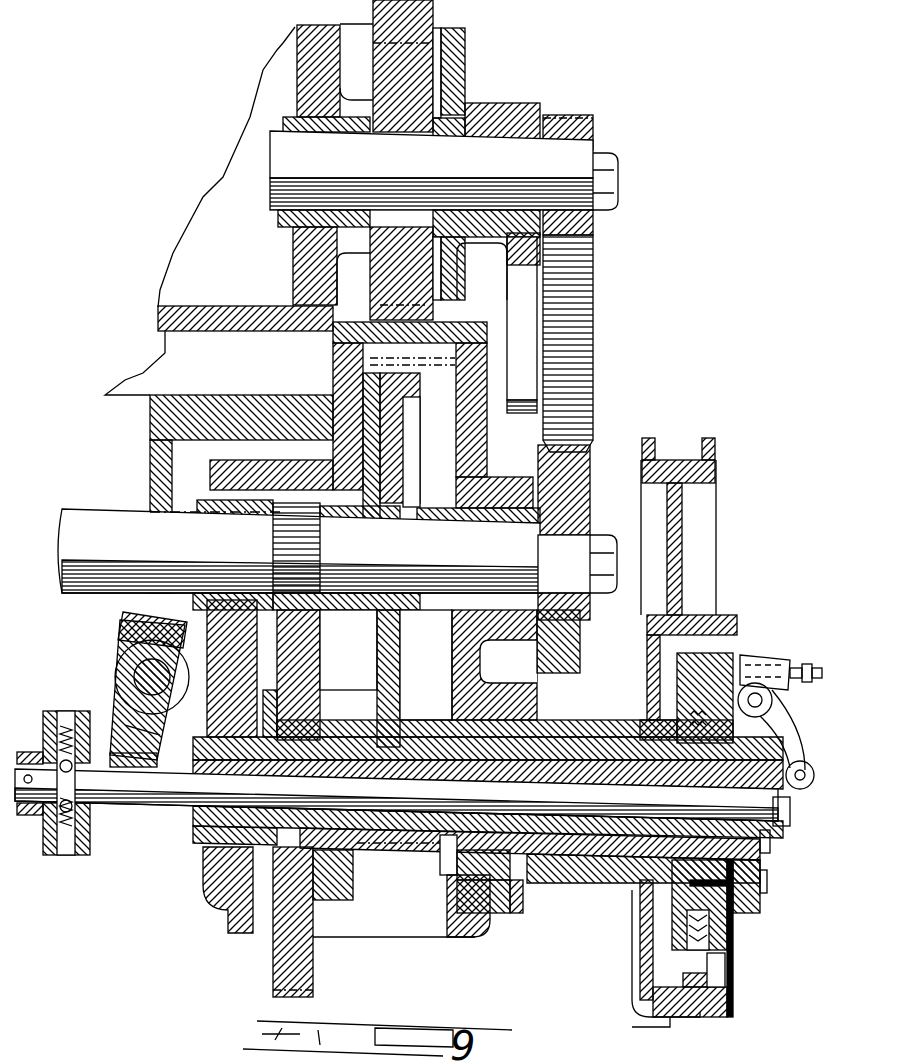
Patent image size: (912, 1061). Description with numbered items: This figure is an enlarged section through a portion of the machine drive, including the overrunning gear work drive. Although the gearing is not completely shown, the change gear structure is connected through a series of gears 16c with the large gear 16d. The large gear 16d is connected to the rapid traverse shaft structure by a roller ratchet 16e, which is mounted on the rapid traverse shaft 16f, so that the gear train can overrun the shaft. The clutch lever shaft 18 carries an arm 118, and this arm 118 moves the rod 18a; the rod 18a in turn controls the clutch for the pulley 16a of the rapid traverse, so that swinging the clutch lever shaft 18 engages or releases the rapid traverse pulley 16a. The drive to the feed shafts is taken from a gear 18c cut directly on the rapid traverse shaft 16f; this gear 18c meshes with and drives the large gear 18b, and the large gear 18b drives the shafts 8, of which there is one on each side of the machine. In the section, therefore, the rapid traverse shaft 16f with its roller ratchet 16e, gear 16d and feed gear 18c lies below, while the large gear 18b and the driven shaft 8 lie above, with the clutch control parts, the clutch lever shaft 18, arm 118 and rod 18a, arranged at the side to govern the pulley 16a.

The shaft 8 is at (101, 525).
The clutch lever shaft 18 is at (147, 673).
The arm 118 is at (128, 727).
The rod 18a is at (150, 812).
The large gear 18b is at (393, 395).
The gear 18c is at (397, 833).
The pulley 16a is at (713, 463).
The series of gears 16c is at (420, 628).
The large gear 16d is at (293, 927).
The roller ratchet 16e is at (170, 790).
The rapid traverse shaft 16f is at (475, 822).